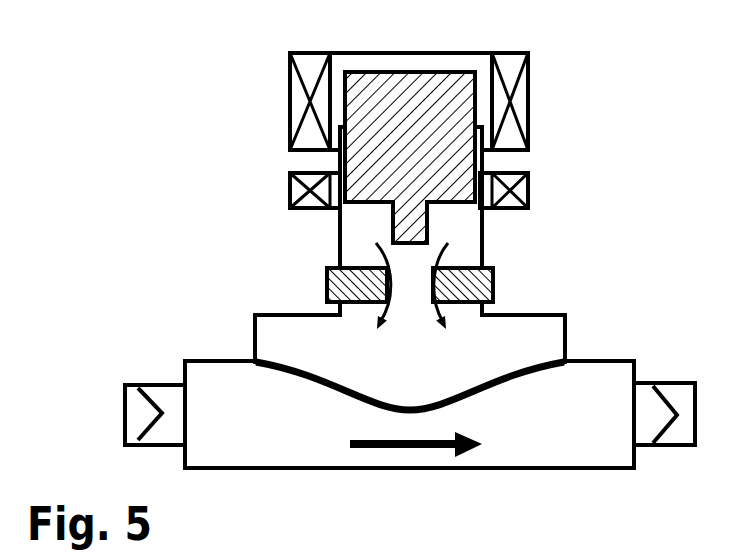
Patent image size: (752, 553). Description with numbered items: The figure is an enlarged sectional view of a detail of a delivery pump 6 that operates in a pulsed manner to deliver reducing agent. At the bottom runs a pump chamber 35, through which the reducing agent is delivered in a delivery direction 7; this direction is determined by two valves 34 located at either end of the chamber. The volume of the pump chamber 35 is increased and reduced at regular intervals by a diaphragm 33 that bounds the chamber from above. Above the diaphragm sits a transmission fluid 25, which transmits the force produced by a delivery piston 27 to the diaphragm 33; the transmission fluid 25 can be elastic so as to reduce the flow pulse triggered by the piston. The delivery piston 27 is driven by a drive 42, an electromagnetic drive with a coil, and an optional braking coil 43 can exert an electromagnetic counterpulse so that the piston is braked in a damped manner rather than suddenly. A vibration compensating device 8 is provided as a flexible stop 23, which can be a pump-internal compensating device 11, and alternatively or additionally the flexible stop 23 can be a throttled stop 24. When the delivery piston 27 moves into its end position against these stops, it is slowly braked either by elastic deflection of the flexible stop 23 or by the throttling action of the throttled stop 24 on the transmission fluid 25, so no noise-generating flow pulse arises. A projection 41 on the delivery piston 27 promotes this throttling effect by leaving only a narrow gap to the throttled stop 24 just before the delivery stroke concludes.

The delivery pump 6 is at (163, 195).
The drive 42 is at (290, 72).
The braking coil 43 is at (290, 172).
The delivery piston 27 is at (460, 72).
The projection 41 is at (427, 228).
The flexible stop 23 is at (327, 269).
The throttled stop 24 is at (327, 288).
The vibration compensating device 8 is at (493, 268).
The pump-internal compensating device 11 is at (493, 283).
The transmission fluid 25 is at (552, 337).
The diaphragm 33 is at (507, 385).
The pump chamber 35 is at (318, 432).
The delivery direction 7 is at (398, 448).
The valves 34 is at (135, 383).